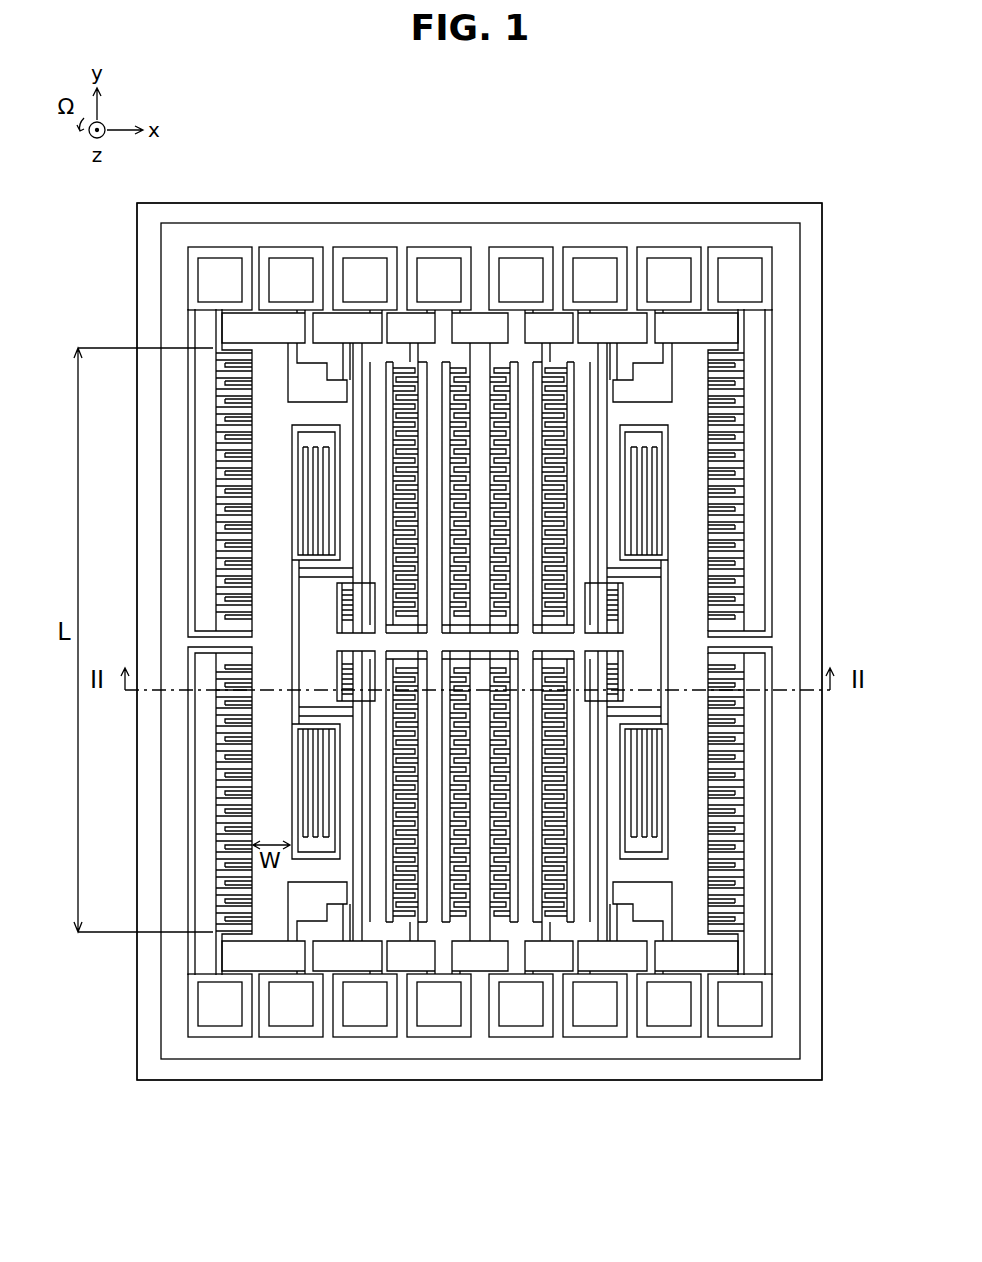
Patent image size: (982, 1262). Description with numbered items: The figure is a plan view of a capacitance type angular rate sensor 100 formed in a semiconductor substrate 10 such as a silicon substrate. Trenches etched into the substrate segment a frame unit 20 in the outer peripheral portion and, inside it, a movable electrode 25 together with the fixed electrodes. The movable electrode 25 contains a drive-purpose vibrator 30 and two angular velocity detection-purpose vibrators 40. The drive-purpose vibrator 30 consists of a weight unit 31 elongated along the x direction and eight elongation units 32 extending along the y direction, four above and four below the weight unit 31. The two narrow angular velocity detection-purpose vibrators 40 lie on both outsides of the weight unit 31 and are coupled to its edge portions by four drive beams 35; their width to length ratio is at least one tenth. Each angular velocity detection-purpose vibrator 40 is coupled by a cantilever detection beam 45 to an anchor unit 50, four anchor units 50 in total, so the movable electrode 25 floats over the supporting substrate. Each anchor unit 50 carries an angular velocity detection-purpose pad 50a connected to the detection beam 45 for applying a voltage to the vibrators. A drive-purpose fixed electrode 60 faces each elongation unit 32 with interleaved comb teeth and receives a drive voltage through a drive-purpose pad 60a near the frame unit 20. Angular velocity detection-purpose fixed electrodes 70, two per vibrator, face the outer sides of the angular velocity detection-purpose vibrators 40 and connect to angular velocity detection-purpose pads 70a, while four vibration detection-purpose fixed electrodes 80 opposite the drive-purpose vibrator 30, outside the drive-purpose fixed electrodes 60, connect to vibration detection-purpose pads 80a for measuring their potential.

The semiconductor substrate 10 is at (138, 1062).
The frame unit 20 is at (180, 1060).
The capacitance type angular rate sensor 100 is at (115, 263).
The movable electrode 25 is at (318, 647).
The drive-purpose vibrator 30 is at (640, 632).
The weight unit 31 is at (555, 640).
The elongation unit 32 is at (420, 372).
The drive beam 35 is at (300, 512).
The angular velocity detection-purpose vibrator 40 is at (270, 878).
The detection beam 45 is at (217, 272).
The anchor unit 50 is at (300, 370).
The angular velocity detection-purpose pad 50a is at (285, 290).
The drive-purpose fixed electrode 60 is at (393, 372).
The drive-purpose pad 60a is at (440, 290).
The angular velocity detection-purpose fixed electrode 70 is at (205, 430).
The angular velocity detection-purpose pad 70a is at (213, 290).
The vibration detection-purpose fixed electrode 80 is at (315, 355).
The vibration detection-purpose pad 80a is at (356, 290).